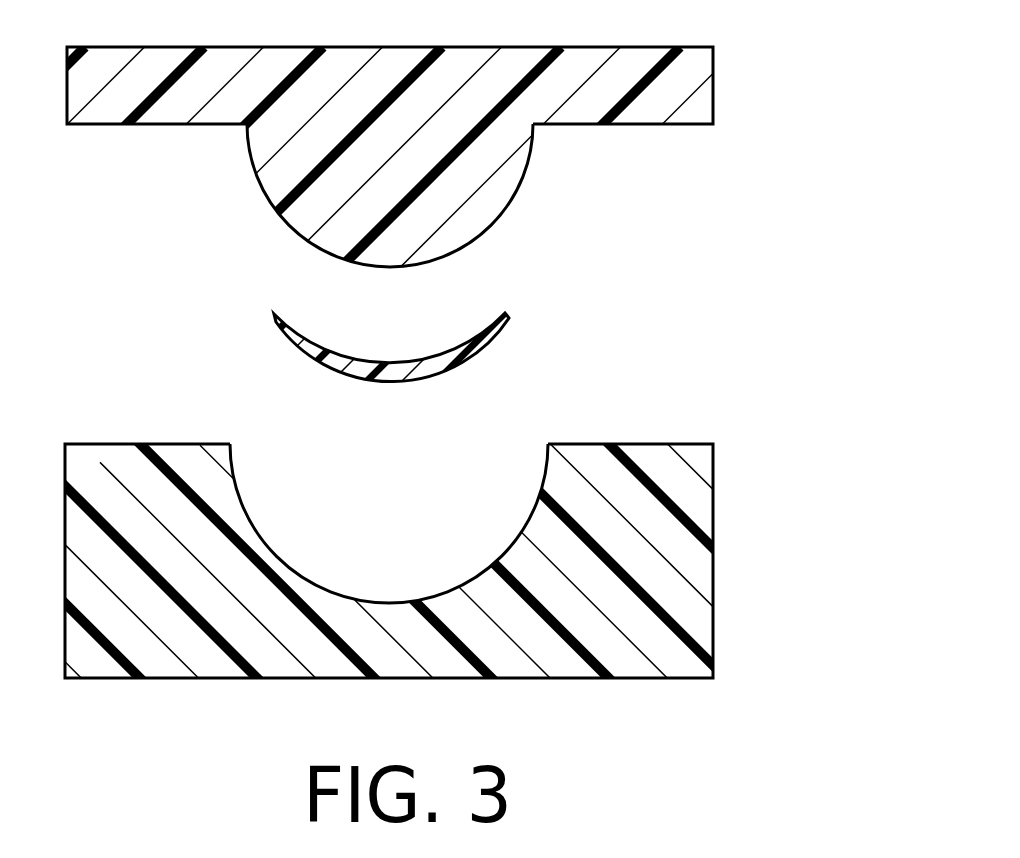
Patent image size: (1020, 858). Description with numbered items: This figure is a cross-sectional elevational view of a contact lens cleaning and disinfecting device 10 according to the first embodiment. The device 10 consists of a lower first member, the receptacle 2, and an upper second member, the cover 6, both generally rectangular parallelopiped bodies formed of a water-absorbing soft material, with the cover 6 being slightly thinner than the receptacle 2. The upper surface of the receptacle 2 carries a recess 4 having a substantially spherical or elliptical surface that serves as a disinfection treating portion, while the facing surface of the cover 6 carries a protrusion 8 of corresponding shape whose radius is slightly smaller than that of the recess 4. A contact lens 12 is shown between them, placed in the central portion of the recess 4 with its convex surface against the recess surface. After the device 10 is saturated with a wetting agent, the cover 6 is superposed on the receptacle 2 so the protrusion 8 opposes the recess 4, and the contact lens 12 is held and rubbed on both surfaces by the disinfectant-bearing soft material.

The receptacle 2 is at (500, 596).
The recess 4 is at (283, 558).
The cover 6 is at (405, 175).
The protrusion 8 is at (268, 198).
The cleaning and disinfecting device 10 is at (500, 452).
The contact lens 12 is at (258, 352).